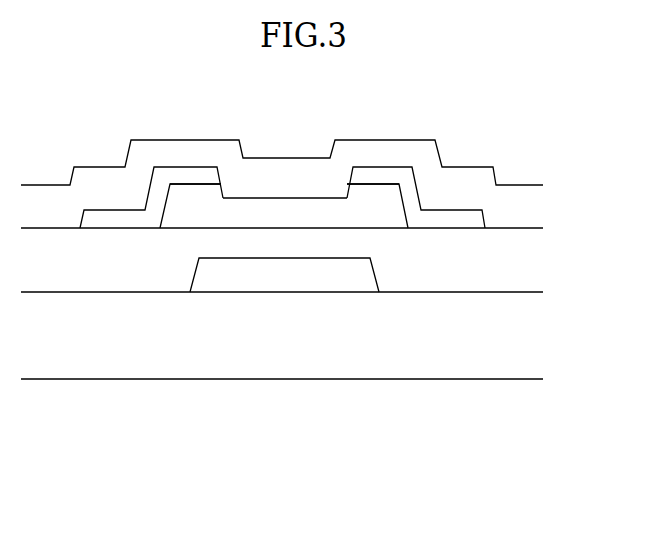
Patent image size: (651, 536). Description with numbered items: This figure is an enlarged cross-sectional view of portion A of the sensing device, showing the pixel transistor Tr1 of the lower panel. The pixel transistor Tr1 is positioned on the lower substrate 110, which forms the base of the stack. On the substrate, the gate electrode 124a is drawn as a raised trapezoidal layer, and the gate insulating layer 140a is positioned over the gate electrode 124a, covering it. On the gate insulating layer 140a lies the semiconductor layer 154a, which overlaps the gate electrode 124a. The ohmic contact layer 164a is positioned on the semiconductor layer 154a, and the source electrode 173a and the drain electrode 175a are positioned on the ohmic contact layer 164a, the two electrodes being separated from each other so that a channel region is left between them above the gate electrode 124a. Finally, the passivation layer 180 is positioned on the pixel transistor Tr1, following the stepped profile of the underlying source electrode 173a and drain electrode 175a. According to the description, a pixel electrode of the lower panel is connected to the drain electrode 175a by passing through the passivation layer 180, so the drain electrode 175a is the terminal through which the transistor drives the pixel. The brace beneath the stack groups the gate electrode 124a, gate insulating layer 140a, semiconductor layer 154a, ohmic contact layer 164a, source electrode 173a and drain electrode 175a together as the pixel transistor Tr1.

The lower substrate 110 is at (528, 342).
The gate electrode 124a is at (282, 277).
The gate insulating layer 140a is at (137, 277).
The semiconductor layer 154a is at (340, 213).
The ohmic contact layer 164a is at (193, 192).
The source electrode 173a is at (110, 217).
The drain electrode 175a is at (427, 219).
The passivation layer 180 is at (528, 204).
The pixel transistor Tr1 is at (455, 443).